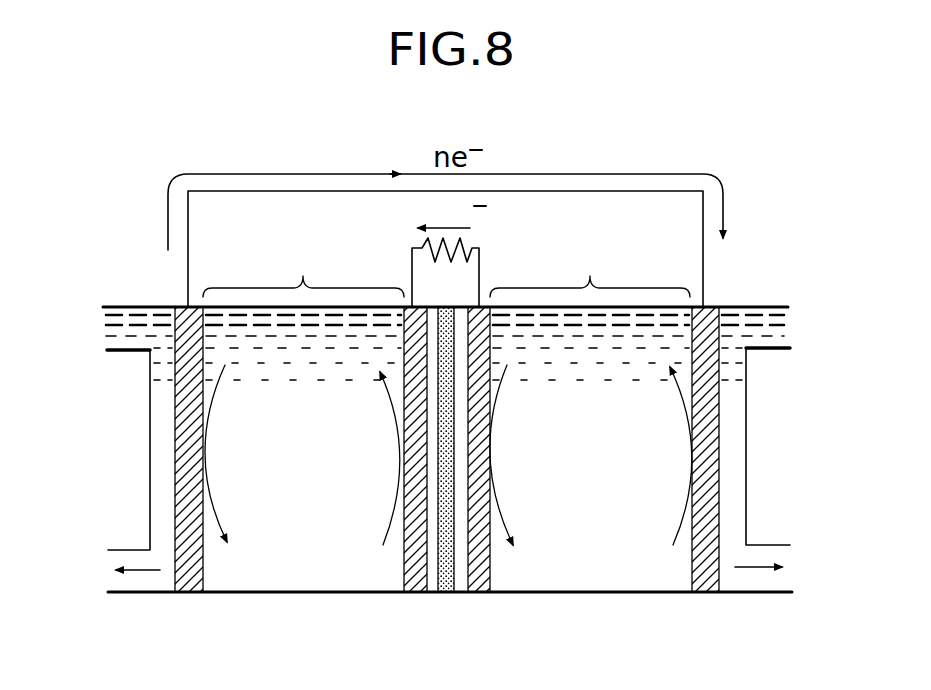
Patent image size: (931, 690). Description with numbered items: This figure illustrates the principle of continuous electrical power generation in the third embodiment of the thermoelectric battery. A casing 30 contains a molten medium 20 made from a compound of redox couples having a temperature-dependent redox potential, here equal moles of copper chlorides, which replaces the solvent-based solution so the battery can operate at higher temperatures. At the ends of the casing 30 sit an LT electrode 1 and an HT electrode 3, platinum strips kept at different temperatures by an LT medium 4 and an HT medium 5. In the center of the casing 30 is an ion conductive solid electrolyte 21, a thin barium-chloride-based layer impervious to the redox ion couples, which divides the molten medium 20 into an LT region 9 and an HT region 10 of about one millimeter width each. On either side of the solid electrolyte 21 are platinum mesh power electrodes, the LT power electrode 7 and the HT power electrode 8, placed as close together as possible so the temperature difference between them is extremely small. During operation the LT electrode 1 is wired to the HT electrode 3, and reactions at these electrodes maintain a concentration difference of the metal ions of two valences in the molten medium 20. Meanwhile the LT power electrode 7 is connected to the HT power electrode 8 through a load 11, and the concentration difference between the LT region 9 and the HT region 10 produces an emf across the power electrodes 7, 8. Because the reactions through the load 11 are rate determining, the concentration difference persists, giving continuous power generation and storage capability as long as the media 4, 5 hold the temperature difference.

The LT electrode 1 is at (187, 318).
The HT electrode 3 is at (720, 322).
The LT medium 4 is at (162, 330).
The HT medium 5 is at (740, 327).
The LT power electrode 7 is at (417, 582).
The HT power electrode 8 is at (480, 587).
The LT region 9 is at (303, 269).
The HT region 10 is at (590, 269).
The load 11 is at (460, 246).
The molten medium 20 is at (253, 585).
The ion conductive solid electrolyte 21 is at (448, 593).
The casing 30 is at (299, 595).